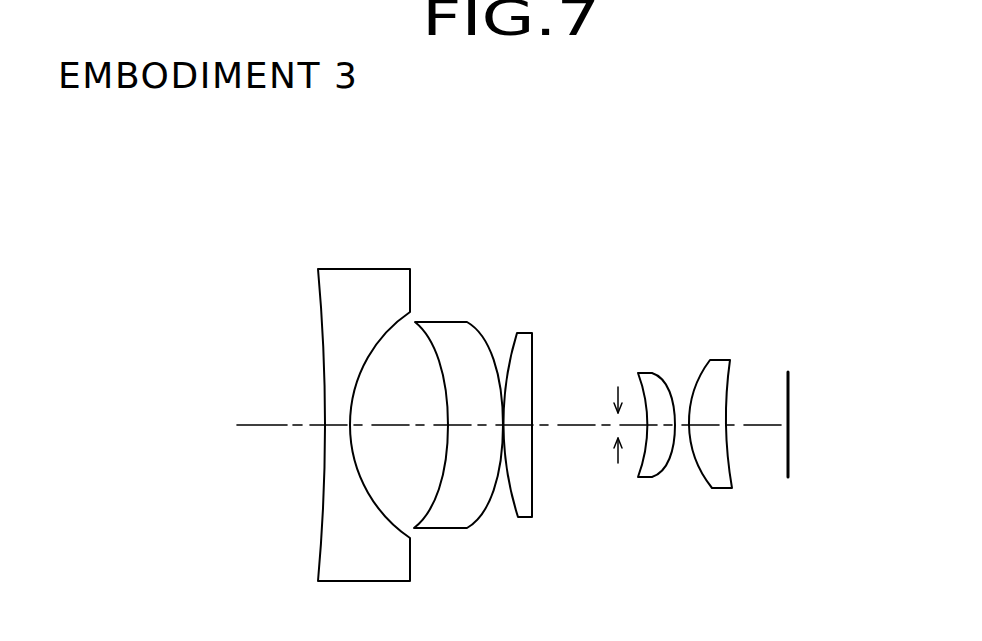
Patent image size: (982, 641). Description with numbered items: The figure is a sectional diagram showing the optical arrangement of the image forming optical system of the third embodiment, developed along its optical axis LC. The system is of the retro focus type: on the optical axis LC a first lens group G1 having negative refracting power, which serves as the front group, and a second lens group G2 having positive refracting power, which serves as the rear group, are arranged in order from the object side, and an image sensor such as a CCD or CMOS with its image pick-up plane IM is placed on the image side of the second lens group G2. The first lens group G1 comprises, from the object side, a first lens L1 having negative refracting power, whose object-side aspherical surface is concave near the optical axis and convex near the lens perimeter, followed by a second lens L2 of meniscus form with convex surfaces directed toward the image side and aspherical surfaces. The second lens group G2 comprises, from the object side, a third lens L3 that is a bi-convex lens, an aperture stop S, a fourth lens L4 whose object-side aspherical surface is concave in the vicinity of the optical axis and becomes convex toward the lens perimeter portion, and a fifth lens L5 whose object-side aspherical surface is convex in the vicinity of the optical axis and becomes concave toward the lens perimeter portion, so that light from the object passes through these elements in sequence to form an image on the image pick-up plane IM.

The optical axis LC is at (287, 425).
The first lens group G1 is at (502, 172).
The second lens group G2 is at (732, 172).
The first lens L1 is at (364, 277).
The second lens L2 is at (444, 327).
The third lens L3 is at (522, 338).
The aperture stop S is at (618, 387).
The fourth lens L4 is at (647, 375).
The fifth lens L5 is at (718, 367).
The image pick-up plane IM is at (787, 397).